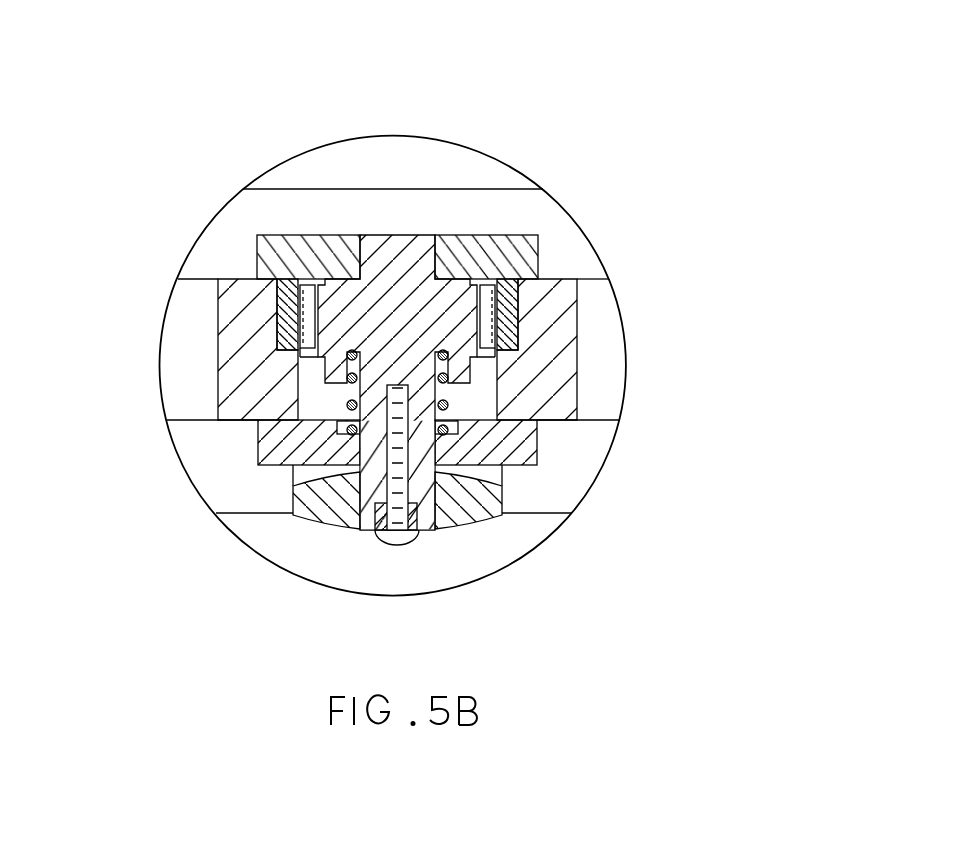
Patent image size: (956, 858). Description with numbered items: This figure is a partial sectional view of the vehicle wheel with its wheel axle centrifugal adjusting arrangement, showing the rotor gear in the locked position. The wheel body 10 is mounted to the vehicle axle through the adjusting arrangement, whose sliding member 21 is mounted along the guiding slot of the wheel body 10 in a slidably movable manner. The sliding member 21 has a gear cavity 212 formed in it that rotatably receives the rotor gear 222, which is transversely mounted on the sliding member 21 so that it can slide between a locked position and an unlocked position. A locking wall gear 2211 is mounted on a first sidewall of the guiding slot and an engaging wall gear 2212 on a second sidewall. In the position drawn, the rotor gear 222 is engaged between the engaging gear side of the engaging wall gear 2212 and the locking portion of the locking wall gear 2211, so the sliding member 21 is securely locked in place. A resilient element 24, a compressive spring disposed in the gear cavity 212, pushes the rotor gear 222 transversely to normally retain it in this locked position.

The wheel body 10 is at (419, 210).
The sliding member 21 is at (507, 248).
The gear cavity 212 is at (323, 503).
The rotor gear 222 is at (428, 310).
The locking wall gear 2211 is at (498, 337).
The engaging wall gear 2212 is at (287, 318).
The resilient element 24 is at (345, 373).